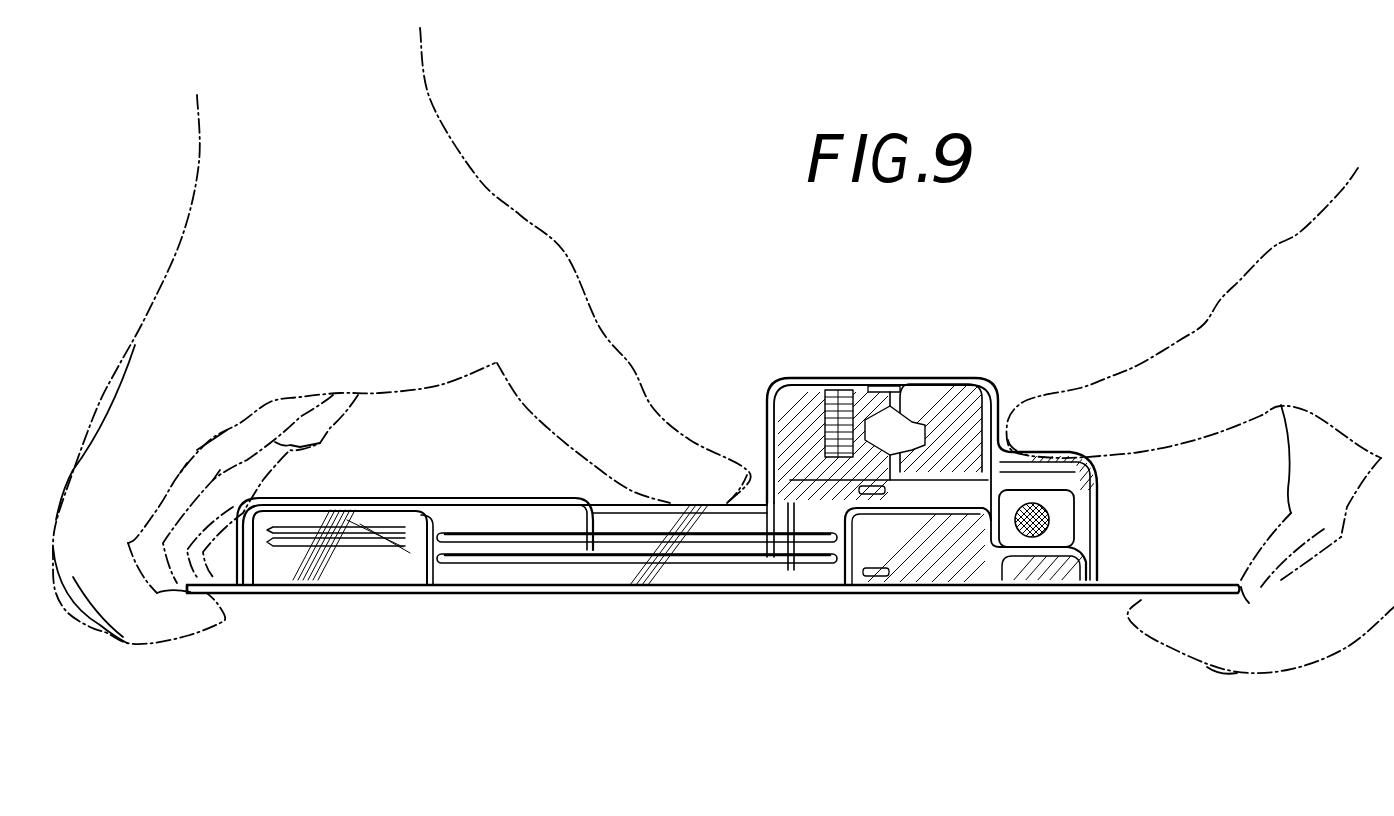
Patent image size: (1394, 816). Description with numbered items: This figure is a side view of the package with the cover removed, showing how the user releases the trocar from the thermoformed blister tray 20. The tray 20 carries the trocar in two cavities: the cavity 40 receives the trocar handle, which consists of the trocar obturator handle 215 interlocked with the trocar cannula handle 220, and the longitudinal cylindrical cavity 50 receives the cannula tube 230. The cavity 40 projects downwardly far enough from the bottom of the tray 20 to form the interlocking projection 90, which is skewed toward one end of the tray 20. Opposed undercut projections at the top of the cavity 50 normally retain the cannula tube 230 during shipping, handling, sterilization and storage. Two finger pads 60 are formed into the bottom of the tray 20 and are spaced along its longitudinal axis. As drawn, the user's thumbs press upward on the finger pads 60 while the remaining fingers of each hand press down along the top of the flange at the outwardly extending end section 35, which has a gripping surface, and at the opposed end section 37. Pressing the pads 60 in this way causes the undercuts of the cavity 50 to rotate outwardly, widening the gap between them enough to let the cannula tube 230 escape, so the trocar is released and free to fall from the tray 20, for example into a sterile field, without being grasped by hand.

The thermoformed blister tray 20 is at (648, 655).
The end section 35 is at (1203, 583).
The opposed end section 37 is at (203, 593).
The cavity 40 is at (800, 400).
The longitudinal cylindrical cavity 50 is at (523, 530).
The finger pads 60 is at (705, 503).
The interlocking projection 90 is at (893, 390).
The trocar obturator handle 215 is at (1058, 568).
The trocar cannula handle 220 is at (895, 565).
The cannula tube 230 is at (414, 556).